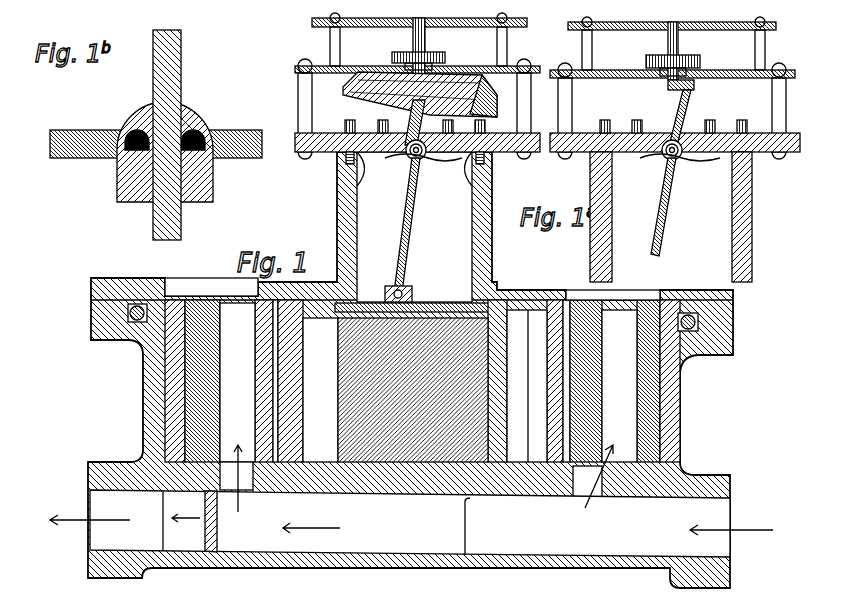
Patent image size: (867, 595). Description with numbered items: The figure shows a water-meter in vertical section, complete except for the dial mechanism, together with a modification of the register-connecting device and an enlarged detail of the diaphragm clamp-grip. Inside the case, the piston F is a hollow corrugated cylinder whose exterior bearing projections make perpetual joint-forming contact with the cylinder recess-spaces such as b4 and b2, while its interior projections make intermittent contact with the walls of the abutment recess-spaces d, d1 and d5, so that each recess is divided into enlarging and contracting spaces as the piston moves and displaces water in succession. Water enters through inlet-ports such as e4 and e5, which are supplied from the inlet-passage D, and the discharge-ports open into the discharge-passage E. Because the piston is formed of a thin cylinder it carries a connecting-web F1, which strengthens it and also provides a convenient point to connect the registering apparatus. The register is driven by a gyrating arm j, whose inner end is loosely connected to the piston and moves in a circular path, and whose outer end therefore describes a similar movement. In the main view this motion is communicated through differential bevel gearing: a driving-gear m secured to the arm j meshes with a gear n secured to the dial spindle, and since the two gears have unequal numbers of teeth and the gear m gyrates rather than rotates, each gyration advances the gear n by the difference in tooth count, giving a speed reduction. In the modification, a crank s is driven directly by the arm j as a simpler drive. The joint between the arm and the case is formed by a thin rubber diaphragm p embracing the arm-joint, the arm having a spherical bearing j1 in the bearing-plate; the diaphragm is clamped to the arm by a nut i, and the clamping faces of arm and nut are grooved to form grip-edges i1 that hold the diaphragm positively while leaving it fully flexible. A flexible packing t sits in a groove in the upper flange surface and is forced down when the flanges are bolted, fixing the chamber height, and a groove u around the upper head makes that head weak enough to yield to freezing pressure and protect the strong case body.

In FIG. 1, the flexible packing t is at (126, 313).
In FIG. 1, the groove u is at (412, 288).
In FIG. 1, the recess-spaces of the abutment d is at (414, 381).
In FIG. 1, the piston F is at (428, 382).
In FIG. 1, the recess-space of the cylinder b4 is at (243, 395).
In FIG. 1, the port d5 is at (321, 405).
In FIG. 1, the recess-space of the abutment d1 is at (524, 409).
In FIG. 1, the recess-space of the cylinder b2 is at (619, 401).
In FIG. 1, the discharge-passage E is at (313, 426).
In FIG. 1, the inlet-port e4 is at (236, 476).
In FIG. 1, the exhaust port e5 is at (587, 481).
In FIG. 1, the inlet-passage D is at (410, 523).
In FIG. 1, the connecting-web F1 is at (411, 295).
In FIG. 1B, the gyrating arm j is at (173, 135).
In FIG. 1A, the gyrating arm j is at (666, 207).
In FIG. 1, the gyrating arm j is at (410, 225).
In FIG. 1B, the spherical bearing j1 is at (192, 120).
In FIG. 1A, the spherical bearing j1 is at (672, 142).
In FIG. 1B, the nut i is at (118, 158).
In FIG. 1A, the nut i is at (682, 158).
In FIG. 1, the nut i is at (408, 156).
In FIG. 1B, the grip-edges i1 is at (128, 134).
In FIG. 1B, the diaphragm p is at (150, 148).
In FIG. 1A, the diaphragm p is at (672, 164).
In FIG. 1, the diaphragm p is at (423, 161).
In FIG. 1, the driving-gear m is at (420, 94).
In FIG. 1, the gear n is at (485, 96).
In FIG. 1A, the crank s is at (677, 94).